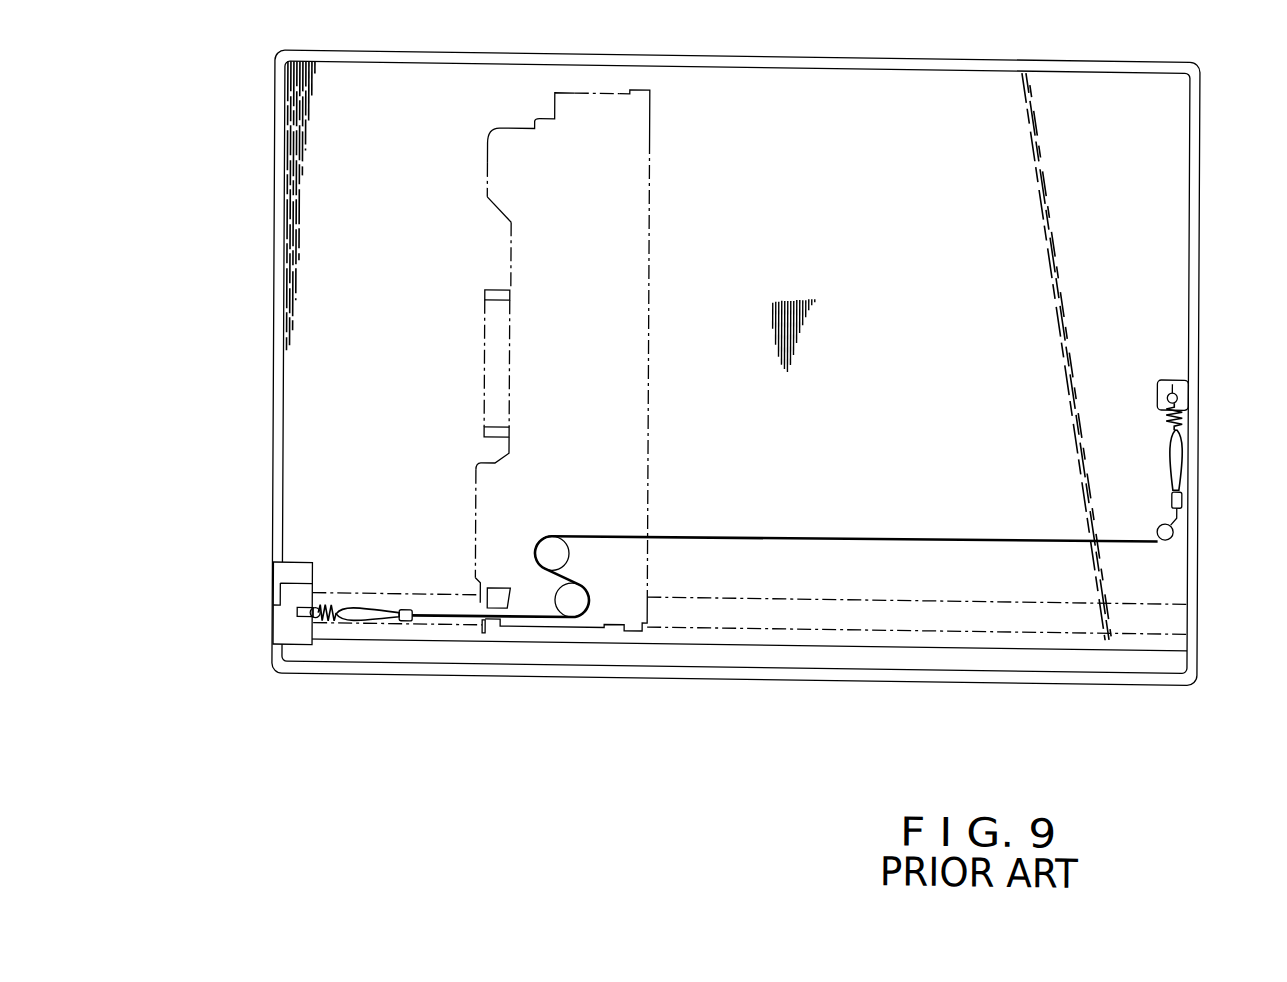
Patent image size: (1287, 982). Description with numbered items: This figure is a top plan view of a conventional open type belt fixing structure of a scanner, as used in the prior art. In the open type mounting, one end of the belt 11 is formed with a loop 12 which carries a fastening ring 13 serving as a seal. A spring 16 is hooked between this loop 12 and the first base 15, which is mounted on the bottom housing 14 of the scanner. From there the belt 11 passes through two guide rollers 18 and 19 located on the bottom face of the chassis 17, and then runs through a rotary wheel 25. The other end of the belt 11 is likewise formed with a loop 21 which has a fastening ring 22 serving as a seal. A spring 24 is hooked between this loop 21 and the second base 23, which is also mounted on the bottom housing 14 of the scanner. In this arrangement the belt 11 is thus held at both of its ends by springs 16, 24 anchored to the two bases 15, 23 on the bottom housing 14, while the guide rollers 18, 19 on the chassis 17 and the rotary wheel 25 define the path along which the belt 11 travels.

The belt 11 is at (808, 533).
The loop 12 is at (364, 622).
The fastening ring 13 is at (408, 622).
The bottom housing 14 is at (1130, 266).
The first base 15 is at (282, 620).
The spring 16 is at (321, 624).
The chassis 17 is at (522, 369).
The guide roller 18 is at (576, 597).
The guide roller 19 is at (552, 550).
The loop 21 is at (1187, 443).
The fastening ring 22 is at (1187, 488).
The second base 23 is at (1182, 371).
The spring 24 is at (1185, 405).
The rotary wheel 25 is at (1177, 528).